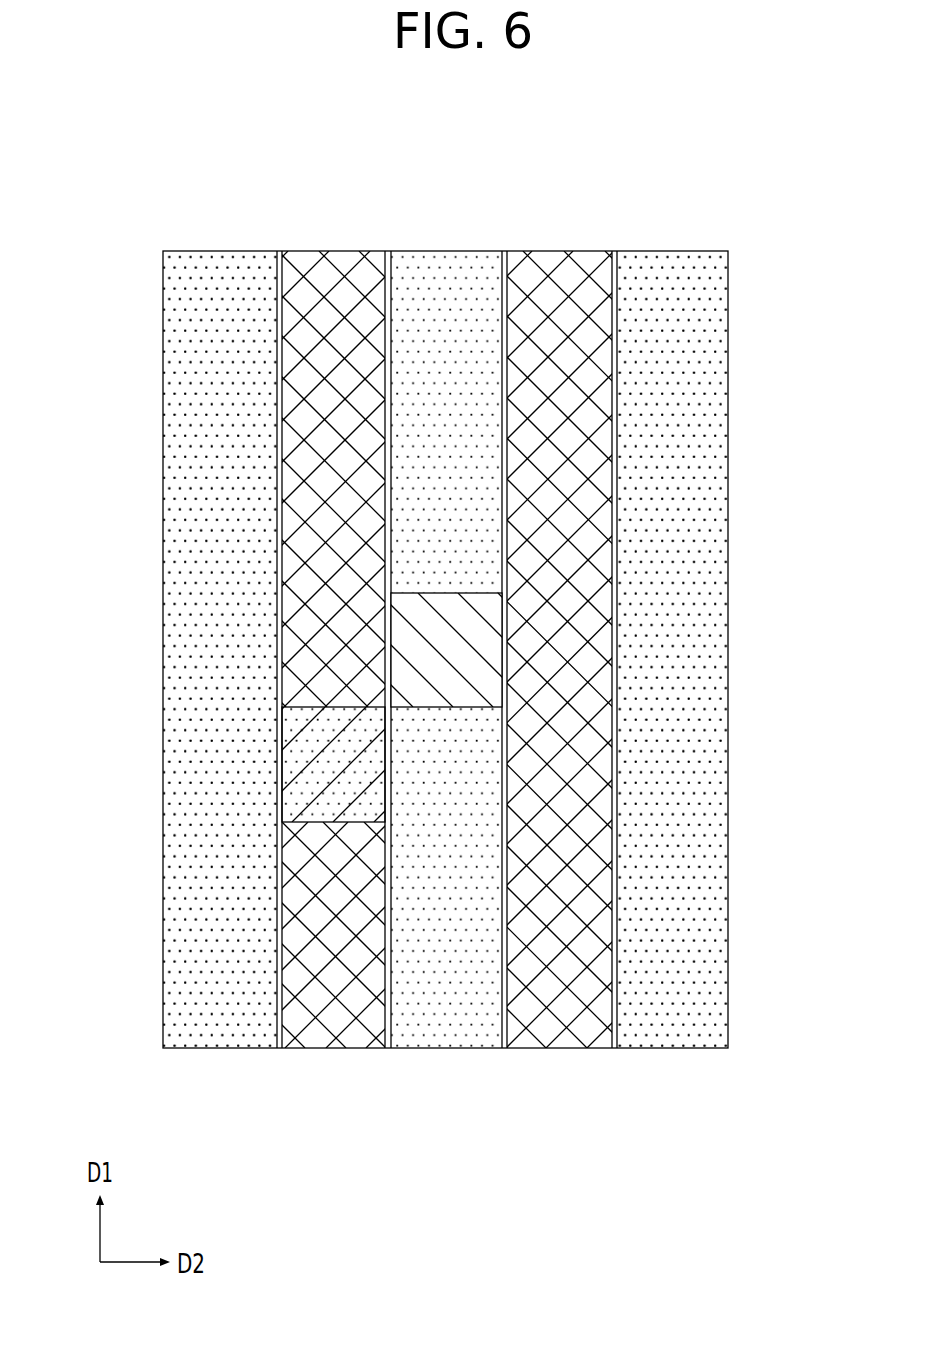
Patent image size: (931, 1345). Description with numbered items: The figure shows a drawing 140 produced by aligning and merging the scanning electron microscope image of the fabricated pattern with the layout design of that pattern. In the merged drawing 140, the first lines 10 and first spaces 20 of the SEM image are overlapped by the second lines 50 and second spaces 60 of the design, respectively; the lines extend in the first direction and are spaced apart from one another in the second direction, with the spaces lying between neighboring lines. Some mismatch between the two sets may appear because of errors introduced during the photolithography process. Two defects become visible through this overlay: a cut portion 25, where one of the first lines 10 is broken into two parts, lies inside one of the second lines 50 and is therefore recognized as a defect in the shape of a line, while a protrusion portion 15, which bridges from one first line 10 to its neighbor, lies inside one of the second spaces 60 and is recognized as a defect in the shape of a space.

The drawing 140 is at (422, 157).
The first spaces 20 is at (215, 266).
The second spaces 60 is at (445, 649).
The first lines 10 is at (280, 1047).
The second lines 50 is at (290, 1049).
The protrusion portion 15 is at (487, 652).
The cut portion 25 is at (335, 777).